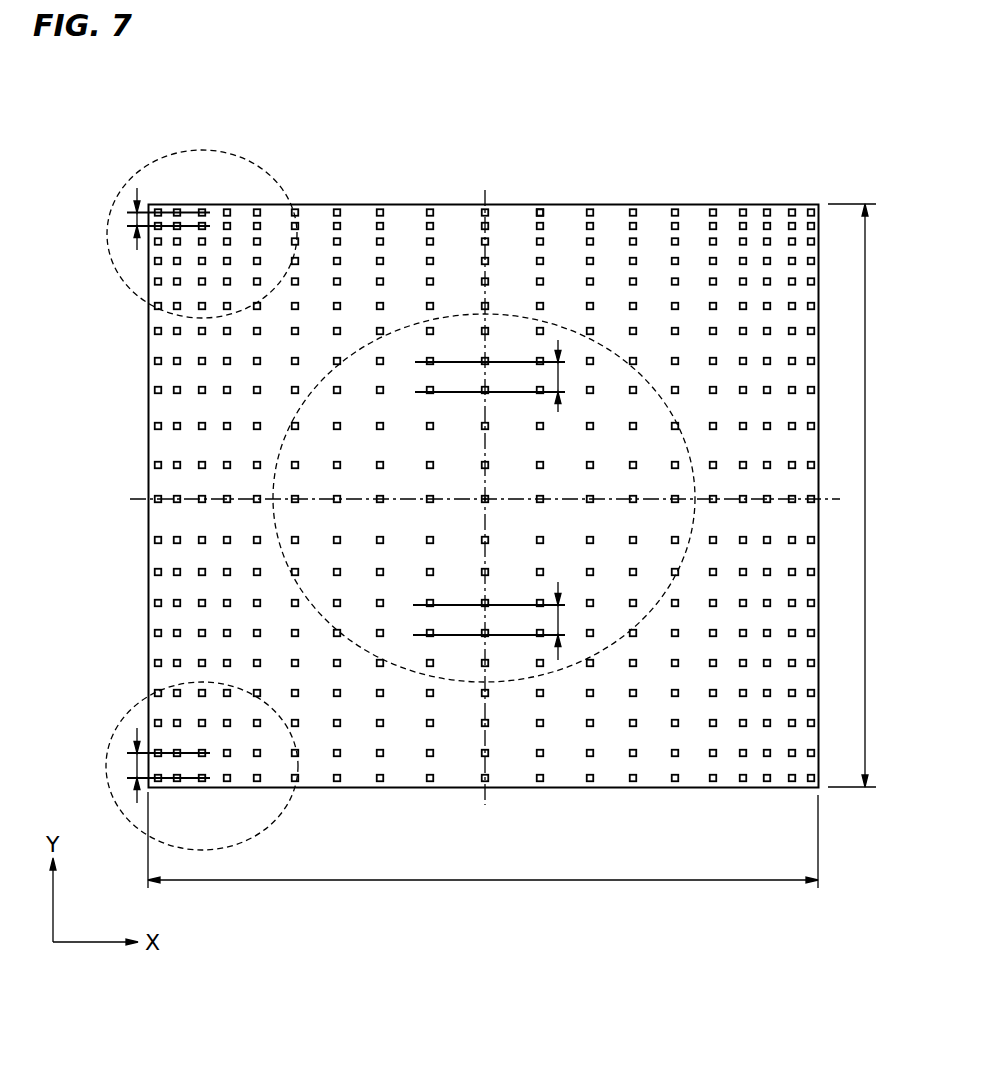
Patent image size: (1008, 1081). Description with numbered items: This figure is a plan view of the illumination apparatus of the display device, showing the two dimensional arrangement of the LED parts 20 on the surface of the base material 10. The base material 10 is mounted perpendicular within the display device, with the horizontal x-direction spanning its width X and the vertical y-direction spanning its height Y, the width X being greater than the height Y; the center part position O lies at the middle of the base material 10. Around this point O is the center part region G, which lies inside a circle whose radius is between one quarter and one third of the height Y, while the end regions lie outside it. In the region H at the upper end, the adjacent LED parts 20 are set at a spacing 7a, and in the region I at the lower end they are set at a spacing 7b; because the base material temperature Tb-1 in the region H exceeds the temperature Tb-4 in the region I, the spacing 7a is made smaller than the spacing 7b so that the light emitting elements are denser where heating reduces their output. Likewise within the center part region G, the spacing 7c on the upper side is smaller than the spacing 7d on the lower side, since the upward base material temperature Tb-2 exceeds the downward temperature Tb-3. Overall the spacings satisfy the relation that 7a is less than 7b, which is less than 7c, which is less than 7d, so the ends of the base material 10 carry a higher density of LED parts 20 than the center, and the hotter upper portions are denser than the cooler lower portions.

The base material 10 is at (653, 240).
The LED parts 20 is at (540, 208).
The spacing within region H 7a is at (140, 220).
The spacing within region I 7b is at (140, 766).
The spacing at top end side of center part region G 7c is at (560, 378).
The spacing at lower end side of center part region G 7d is at (560, 617).
The center part position O is at (483, 497).
The center part region G is at (568, 670).
The region at the upper end H is at (158, 160).
The region at the lower end I is at (258, 848).
The base material temperature within region H Tb-1 is at (168, 220).
The upward base material temperature within center part region G Tb-2 is at (490, 377).
The downward base material temperature within center part region G Tb-3 is at (489, 620).
The base material temperature within region I Tb-4 is at (168, 765).
The width in the x-direction X is at (483, 854).
The height in the y-direction Y is at (858, 495).